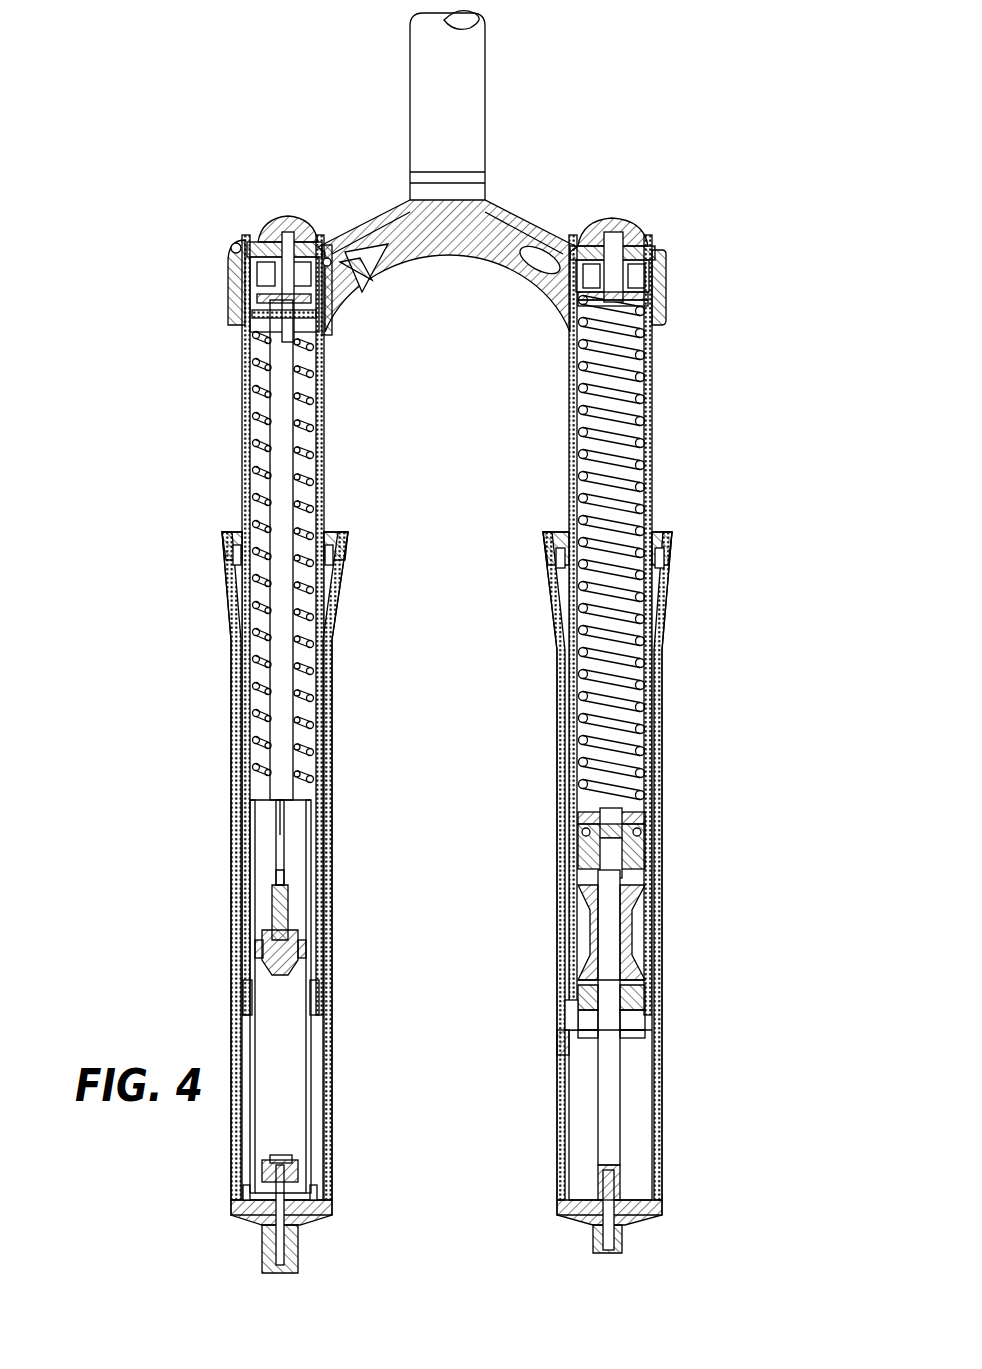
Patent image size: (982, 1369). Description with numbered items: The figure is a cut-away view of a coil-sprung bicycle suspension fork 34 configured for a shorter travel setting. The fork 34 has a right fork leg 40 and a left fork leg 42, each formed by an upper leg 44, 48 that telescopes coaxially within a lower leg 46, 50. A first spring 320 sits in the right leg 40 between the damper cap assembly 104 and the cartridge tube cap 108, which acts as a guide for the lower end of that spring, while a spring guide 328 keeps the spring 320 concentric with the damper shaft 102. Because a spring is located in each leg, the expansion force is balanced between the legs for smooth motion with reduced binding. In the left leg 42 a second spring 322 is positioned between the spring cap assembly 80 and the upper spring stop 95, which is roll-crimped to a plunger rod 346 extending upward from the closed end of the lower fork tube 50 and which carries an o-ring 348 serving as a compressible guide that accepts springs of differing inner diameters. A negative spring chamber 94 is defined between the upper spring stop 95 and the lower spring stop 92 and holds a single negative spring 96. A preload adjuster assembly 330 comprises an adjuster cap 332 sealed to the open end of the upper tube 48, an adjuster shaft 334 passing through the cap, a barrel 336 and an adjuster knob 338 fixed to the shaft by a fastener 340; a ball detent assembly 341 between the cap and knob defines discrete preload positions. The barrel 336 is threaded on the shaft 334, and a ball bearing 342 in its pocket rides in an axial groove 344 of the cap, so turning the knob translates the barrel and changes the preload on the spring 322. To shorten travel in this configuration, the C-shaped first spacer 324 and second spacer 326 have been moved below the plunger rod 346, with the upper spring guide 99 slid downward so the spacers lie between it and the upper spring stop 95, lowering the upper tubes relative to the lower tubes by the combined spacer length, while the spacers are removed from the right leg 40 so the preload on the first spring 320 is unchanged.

The suspension fork 34 is at (368, 1138).
The right fork leg 40 is at (284, 715).
The left fork leg 42 is at (669, 702).
The upper leg 44 is at (322, 378).
The lower leg 46 is at (330, 918).
The upper leg 48 is at (570, 480).
The lower fork tube 50 is at (556, 806).
The spring cap assembly 80 is at (770, 278).
The lower spring stop 92 is at (562, 1045).
The negative spring chamber 94 is at (655, 1040).
The upper spring stop 95 is at (648, 850).
The negative spring 96 is at (572, 1010).
The upper spring guide 99 is at (650, 1010).
The damper shaft 102 is at (318, 698).
The damper cap assembly 104 is at (262, 200).
The cartridge tube cap 108 is at (250, 790).
The first spring 320 is at (232, 538).
The second spring 322 is at (668, 560).
The first spacer 324 is at (640, 922).
The second spacer 326 is at (640, 984).
The spring guide 328 is at (332, 330).
The preload adjuster assembly 330 is at (631, 251).
The adjuster cap 332 is at (586, 240).
The adjuster shaft 334 is at (573, 320).
The barrel 336 is at (583, 256).
The adjuster knob 338 is at (646, 232).
The fastener 340 is at (652, 337).
The ball detent assembly 341 is at (621, 216).
The ball bearing 342 is at (662, 255).
The axial groove 344 is at (662, 274).
The plunger rod 346 is at (622, 1085).
The o-ring 348 is at (645, 840).